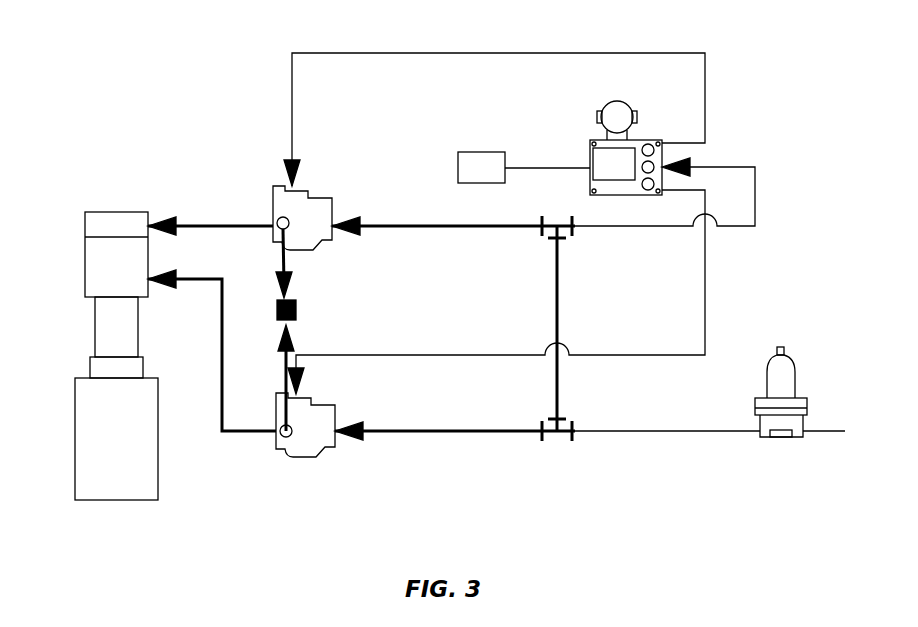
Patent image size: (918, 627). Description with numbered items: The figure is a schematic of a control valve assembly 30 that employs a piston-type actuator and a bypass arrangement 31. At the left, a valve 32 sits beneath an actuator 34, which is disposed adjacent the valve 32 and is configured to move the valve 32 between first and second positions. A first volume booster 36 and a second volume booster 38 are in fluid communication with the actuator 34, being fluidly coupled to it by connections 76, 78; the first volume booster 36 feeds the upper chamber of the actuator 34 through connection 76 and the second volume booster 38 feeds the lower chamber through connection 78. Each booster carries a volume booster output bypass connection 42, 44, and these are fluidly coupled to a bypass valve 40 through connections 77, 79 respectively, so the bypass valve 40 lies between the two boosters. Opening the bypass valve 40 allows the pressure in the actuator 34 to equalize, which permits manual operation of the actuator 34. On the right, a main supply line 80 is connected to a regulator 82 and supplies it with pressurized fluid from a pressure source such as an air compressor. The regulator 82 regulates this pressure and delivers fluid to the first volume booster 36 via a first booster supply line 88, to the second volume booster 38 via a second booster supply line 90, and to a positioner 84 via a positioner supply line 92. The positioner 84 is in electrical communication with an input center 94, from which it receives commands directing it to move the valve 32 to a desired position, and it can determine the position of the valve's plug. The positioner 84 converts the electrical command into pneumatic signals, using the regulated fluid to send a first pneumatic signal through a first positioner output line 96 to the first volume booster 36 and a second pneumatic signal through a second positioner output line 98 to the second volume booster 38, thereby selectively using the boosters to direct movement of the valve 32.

The control valve assembly 30 is at (184, 140).
The bypass arrangement 31 is at (318, 130).
The valve 32 is at (75, 435).
The actuator 34 is at (85, 290).
The first volume booster 36 is at (322, 198).
The second volume booster 38 is at (328, 404).
The bypass valve 40 is at (297, 303).
The volume booster output bypass connection 42 is at (277, 220).
The volume booster output bypass connection 44 is at (281, 438).
The connection 76 is at (258, 228).
The connection 77 is at (296, 258).
The connection 78 is at (222, 347).
The connection 79 is at (284, 381).
The main supply line 80 is at (826, 431).
The regulator 82 is at (795, 381).
The positioner 84 is at (590, 148).
The first booster supply line 88 is at (470, 228).
The second booster supply line 90 is at (424, 433).
The positioner supply line 92 is at (755, 208).
The input center 94 is at (458, 152).
The first positioner output line 96 is at (300, 53).
The second positioner output line 98 is at (440, 355).